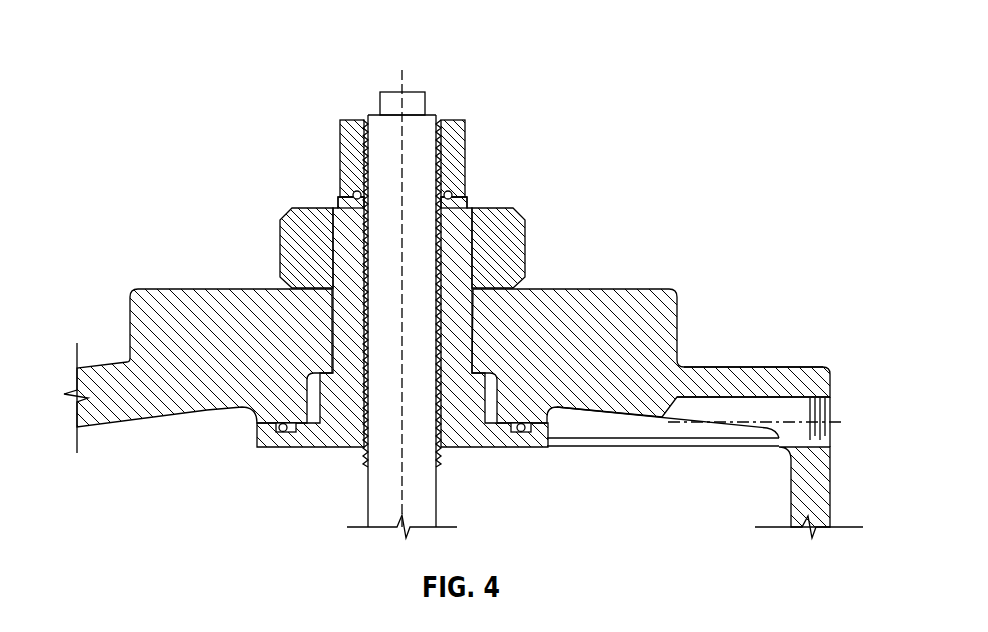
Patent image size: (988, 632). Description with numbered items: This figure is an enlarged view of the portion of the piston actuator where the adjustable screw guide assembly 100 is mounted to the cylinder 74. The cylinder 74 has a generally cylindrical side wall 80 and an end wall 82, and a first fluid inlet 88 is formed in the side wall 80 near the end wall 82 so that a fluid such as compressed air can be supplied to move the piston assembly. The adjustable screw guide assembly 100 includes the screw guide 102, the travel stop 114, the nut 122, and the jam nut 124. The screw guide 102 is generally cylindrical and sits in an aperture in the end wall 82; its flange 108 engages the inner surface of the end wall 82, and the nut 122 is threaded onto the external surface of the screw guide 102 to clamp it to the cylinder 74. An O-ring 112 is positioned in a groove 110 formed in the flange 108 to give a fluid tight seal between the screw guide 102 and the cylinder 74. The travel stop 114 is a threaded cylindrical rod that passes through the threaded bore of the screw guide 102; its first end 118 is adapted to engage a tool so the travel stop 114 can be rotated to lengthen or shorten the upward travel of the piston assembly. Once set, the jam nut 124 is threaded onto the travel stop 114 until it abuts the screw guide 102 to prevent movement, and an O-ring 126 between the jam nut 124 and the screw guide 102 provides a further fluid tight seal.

The cylinder 74 is at (829, 360).
The side wall 80 is at (812, 497).
The end wall 82 is at (782, 371).
The first fluid inlet 88 is at (810, 432).
The adjustable screw guide assembly 100 is at (339, 101).
The screw guide 102 is at (334, 197).
The flange 108 is at (302, 446).
The groove 110 is at (517, 448).
The O-ring 112 is at (521, 414).
The travel stop 114 is at (367, 497).
The first end 118 is at (400, 90).
The nut 122 is at (278, 249).
The jam nut 124 is at (469, 127).
The O-ring 126 is at (457, 193).